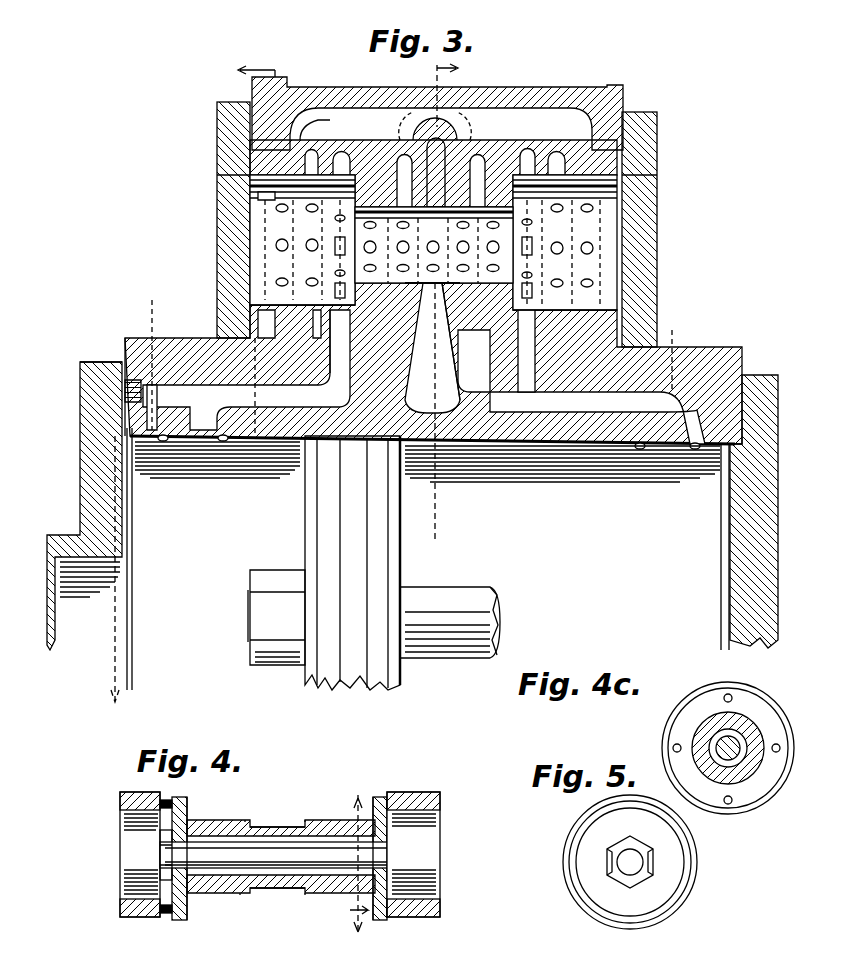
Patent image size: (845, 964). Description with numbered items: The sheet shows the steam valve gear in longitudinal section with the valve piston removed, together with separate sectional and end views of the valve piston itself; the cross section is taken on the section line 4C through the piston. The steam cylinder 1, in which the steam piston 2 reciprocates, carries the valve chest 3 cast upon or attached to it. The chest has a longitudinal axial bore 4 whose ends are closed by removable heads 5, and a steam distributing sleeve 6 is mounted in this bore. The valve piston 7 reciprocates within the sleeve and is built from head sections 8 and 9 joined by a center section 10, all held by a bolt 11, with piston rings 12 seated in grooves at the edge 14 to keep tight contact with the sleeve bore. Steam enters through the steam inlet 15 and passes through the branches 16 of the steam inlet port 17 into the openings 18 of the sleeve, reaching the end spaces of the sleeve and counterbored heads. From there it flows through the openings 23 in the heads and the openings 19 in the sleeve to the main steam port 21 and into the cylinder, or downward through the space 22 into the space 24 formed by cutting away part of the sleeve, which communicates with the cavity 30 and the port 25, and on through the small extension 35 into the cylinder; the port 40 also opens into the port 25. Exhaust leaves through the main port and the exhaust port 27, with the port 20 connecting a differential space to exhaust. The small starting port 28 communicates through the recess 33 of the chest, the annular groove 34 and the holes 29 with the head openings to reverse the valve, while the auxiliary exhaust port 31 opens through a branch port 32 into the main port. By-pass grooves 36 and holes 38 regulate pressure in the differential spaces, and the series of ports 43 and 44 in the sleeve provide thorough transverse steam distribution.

In FIG. 3, the steam cylinder 1 is at (700, 564).
In FIG. 3, the steam piston 2 is at (375, 563).
In FIG. 3, the valve chest 3 is at (625, 100).
In FIG. 3, the longitudinal axial bore 4 is at (657, 150).
In FIG. 3, the removable heads 5 is at (217, 176).
In FIG. 3, the steam distributing sleeve 6 is at (546, 82).
In FIG. 3, the valve piston 7 is at (439, 310).
In FIG. 4, the valve piston 7 is at (208, 894).
In FIG. 4C, the valve piston 7 is at (745, 737).
In FIG. 4, the head section 8 is at (142, 918).
In FIG. 4, the head section 9 is at (405, 921).
In FIG. 4C, the head section 9 is at (750, 796).
In FIG. 5, the head section 9 is at (660, 834).
In FIG. 4, the center section 10 is at (320, 893).
In FIG. 4, the bolt 11 is at (262, 856).
In FIG. 4C, the bolt 11 is at (740, 750).
In FIG. 5, the bolt 11 is at (635, 865).
In FIG. 4, the piston rings 12 is at (185, 806).
In FIG. 4, the edge of the valve 14 is at (236, 896).
In FIG. 3, the steam inlet 15 is at (470, 94).
In FIG. 3, the branch of the steam inlet port 16 is at (250, 106).
In FIG. 3, the steam inlet port 17 is at (352, 132).
In FIG. 3, the openings in the distributing sleeve 18 is at (217, 128).
In FIG. 3, the openings in the sleeve 19 is at (617, 250).
In FIG. 3, the port 20 is at (282, 440).
In FIG. 3, the main steam port 21 is at (200, 440).
In FIG. 3, the space at the end of the sleeve 22 is at (250, 162).
In FIG. 4, the openings in the piston head 23 is at (215, 926).
In FIG. 3, the space 24 is at (250, 290).
In FIG. 3, the port 25 is at (684, 347).
In FIG. 3, the exhaust port 27 is at (447, 442).
In FIG. 3, the small starting port 28 is at (223, 445).
In FIG. 3, the holes in the sleeve 29 is at (258, 215).
In FIG. 3, the cavity 30 is at (250, 264).
In FIG. 3, the auxiliary exhaust port 31 is at (110, 366).
In FIG. 3, the branch port 32 is at (138, 395).
In FIG. 3, the recess of the steam chest 33 is at (255, 445).
In FIG. 3, the annular groove 34 is at (309, 152).
In FIG. 3, the small extension port 35 is at (130, 368).
In FIG. 3, the by-pass grooves 36 is at (352, 152).
In FIG. 4C, the holes 38 is at (672, 748).
In FIG. 3, the port 40 is at (147, 340).
In FIG. 3, the ports in the sleeve 43 is at (397, 248).
In FIG. 3, the ports in the sleeve 44 is at (465, 253).
In FIG. 4, the section line 4C— 4C is at (352, 864).